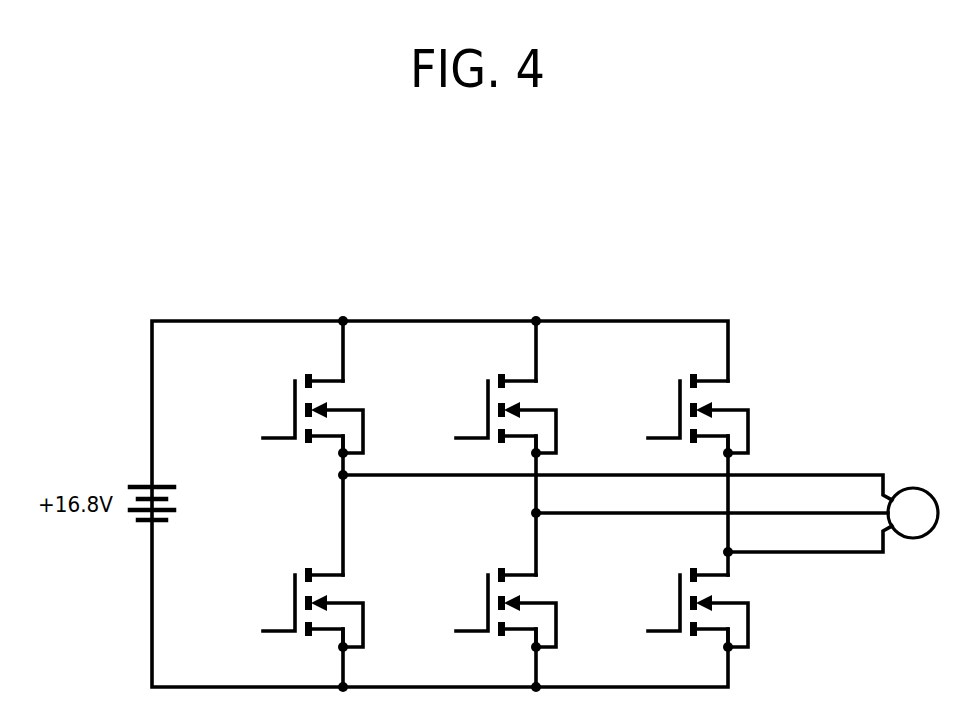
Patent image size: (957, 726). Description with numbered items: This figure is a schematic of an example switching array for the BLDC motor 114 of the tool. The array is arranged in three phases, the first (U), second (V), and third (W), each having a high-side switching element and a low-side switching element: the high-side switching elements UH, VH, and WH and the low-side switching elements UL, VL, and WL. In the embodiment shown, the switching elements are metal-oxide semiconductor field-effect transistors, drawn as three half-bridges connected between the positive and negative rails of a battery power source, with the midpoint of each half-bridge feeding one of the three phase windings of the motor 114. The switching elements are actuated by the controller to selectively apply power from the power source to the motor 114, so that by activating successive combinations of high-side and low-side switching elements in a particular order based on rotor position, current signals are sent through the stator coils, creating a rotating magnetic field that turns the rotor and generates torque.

The motor 114 is at (913, 481).
The high-side switching element UH is at (297, 413).
The low-side switching element UL is at (305, 607).
The high-side switching element VH is at (494, 413).
The low-side switching element VL is at (502, 607).
The high-side switching element WH is at (686, 413).
The low-side switching element WL is at (687, 607).